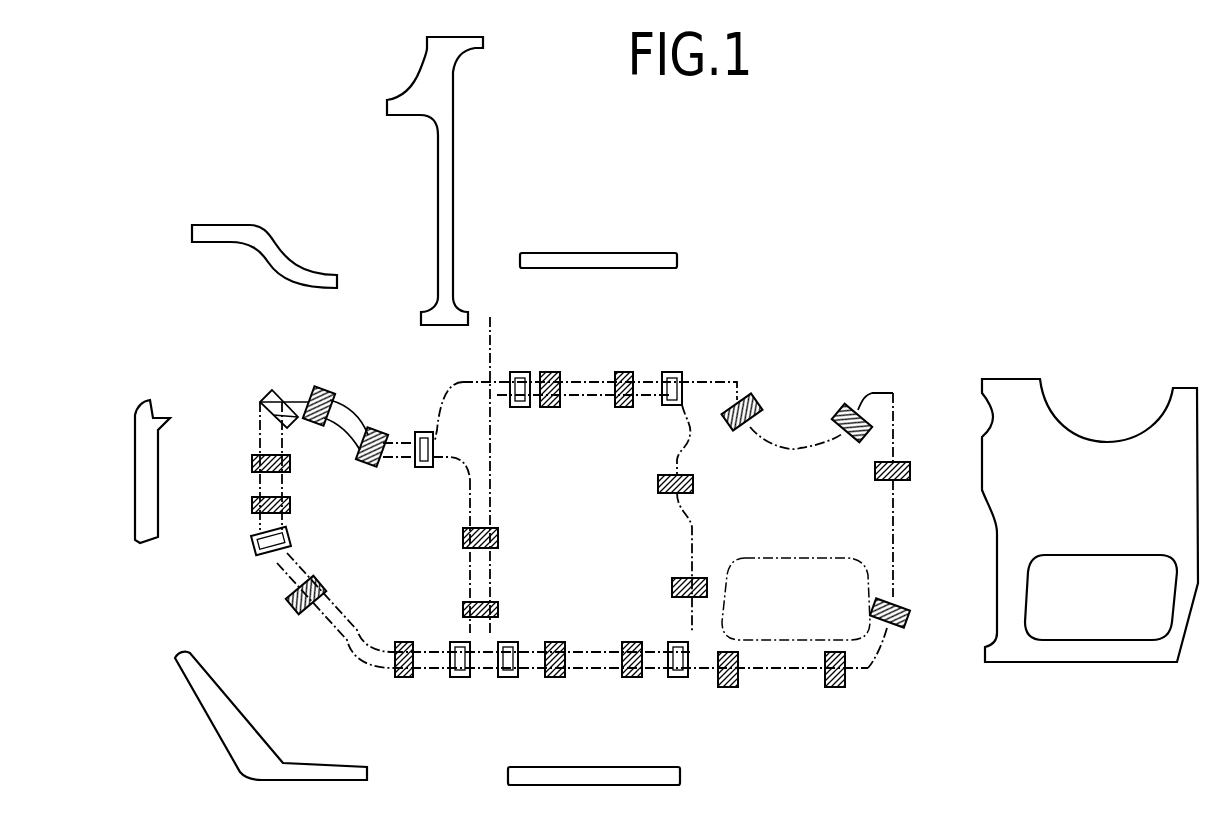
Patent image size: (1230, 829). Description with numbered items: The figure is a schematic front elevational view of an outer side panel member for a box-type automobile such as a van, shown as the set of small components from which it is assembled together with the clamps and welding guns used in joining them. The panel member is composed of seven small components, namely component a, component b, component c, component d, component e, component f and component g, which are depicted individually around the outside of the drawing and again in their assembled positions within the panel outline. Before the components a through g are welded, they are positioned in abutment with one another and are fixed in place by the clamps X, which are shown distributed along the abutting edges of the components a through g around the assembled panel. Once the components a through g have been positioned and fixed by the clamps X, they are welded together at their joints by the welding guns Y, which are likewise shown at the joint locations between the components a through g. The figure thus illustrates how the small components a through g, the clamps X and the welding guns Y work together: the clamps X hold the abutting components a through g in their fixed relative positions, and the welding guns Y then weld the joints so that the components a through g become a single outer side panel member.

The component a is at (138, 443).
The component b is at (225, 720).
The component c is at (562, 773).
The component d is at (1037, 407).
The component e is at (615, 262).
The component f is at (445, 183).
The component g is at (275, 262).
The clamp X is at (323, 390).
The welding gun Y is at (255, 545).